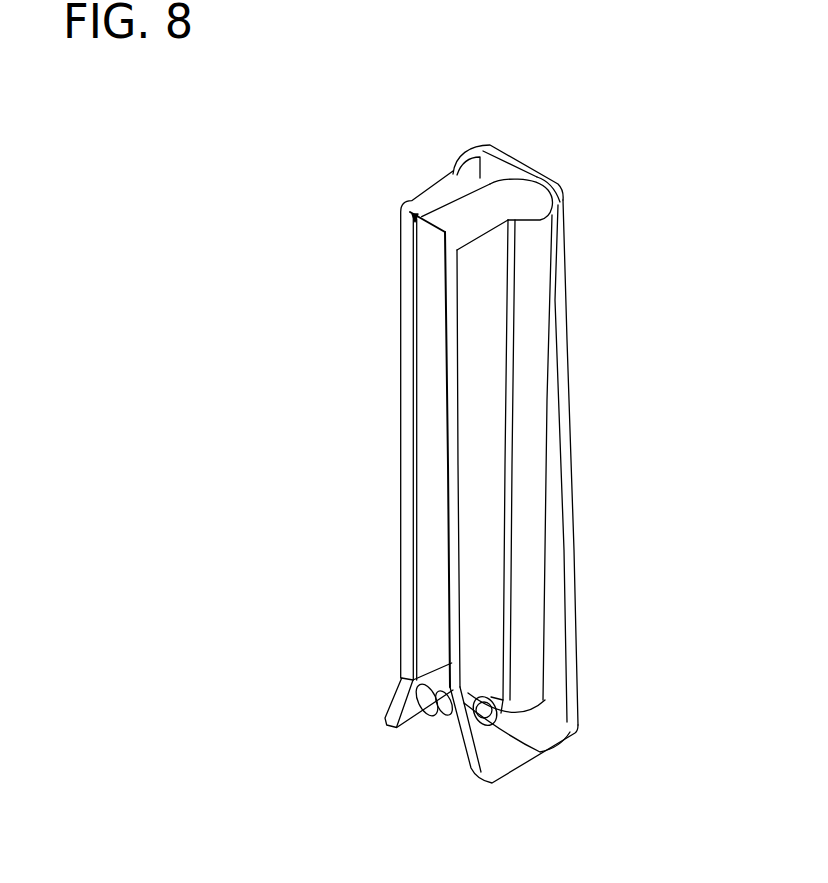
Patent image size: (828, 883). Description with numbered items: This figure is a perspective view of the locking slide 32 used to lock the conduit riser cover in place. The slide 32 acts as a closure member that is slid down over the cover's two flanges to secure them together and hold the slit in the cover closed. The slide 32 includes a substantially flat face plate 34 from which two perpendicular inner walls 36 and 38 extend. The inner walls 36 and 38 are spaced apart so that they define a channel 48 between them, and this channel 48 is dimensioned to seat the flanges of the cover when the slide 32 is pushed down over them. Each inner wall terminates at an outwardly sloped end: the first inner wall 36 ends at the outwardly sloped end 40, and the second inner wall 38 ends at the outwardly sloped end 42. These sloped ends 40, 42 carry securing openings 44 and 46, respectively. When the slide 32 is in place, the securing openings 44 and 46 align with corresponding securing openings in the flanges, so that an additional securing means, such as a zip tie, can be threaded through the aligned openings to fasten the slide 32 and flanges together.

The slide 32 is at (589, 318).
The face plate 34 is at (566, 258).
The inner wall 36 is at (480, 378).
The inner wall 38 is at (399, 322).
The outwardly sloped end 40 is at (503, 760).
The outwardly sloped end 42 is at (387, 710).
The securing opening 44 is at (497, 717).
The securing opening 46 is at (412, 730).
The channel 48 is at (429, 487).